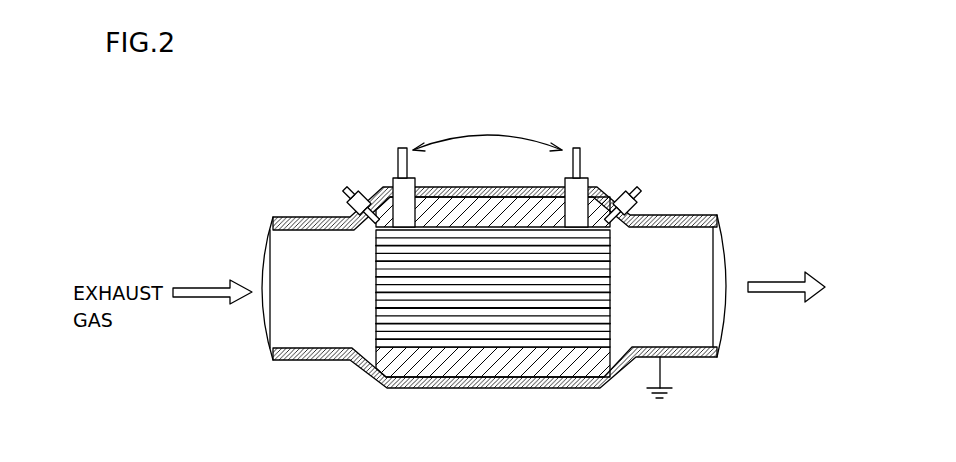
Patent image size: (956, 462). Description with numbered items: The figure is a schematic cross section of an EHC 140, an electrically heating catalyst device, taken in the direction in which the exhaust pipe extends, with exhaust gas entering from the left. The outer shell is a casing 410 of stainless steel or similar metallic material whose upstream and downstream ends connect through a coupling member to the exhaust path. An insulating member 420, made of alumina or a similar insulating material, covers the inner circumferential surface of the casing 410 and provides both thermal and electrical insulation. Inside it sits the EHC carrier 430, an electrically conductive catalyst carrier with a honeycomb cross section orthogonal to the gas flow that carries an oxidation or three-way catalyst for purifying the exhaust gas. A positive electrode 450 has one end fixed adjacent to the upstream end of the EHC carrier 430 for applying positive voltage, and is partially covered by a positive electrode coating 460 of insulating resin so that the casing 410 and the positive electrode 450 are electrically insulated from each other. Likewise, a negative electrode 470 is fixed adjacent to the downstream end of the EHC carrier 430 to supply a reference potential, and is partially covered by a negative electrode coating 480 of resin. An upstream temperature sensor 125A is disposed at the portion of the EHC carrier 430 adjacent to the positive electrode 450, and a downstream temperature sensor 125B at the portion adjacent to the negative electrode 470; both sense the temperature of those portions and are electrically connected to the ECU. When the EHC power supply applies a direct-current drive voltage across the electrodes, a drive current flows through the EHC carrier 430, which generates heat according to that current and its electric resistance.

The EHC 140 is at (571, 250).
The casing 410 is at (318, 361).
The insulating member 420 is at (540, 363).
The EHC carrier 430 is at (453, 317).
The positive electrode 450 is at (403, 147).
The positive electrode coating 460 is at (395, 187).
The negative electrode 470 is at (576, 147).
The negative electrode coating 480 is at (581, 189).
The upstream temperature sensor 125A is at (347, 190).
The downstream temperature sensor 125B is at (638, 188).